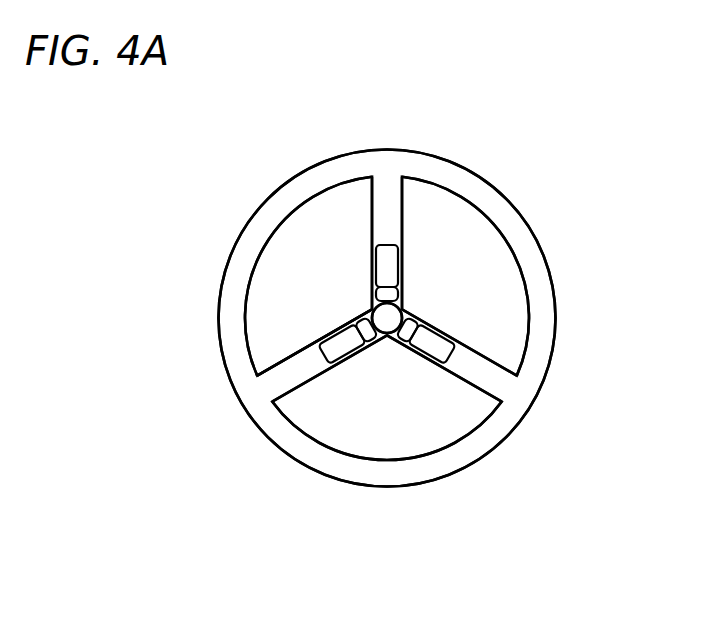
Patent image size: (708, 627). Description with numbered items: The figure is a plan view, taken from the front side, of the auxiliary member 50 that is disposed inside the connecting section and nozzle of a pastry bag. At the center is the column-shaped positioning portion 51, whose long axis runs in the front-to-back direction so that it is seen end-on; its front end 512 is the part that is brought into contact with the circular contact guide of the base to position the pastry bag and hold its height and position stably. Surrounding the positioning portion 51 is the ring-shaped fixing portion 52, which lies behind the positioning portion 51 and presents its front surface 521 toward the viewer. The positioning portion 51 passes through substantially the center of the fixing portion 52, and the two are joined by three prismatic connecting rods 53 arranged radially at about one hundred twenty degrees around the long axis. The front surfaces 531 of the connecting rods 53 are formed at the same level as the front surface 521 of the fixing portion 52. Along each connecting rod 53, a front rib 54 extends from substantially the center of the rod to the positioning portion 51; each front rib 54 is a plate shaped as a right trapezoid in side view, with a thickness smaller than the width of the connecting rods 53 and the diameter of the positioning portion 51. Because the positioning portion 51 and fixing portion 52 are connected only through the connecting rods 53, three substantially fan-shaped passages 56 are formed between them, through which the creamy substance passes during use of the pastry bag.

The auxiliary member 50 is at (549, 152).
The positioning portion 51 is at (392, 323).
The front end 512 is at (400, 312).
The fixing portion 52 is at (345, 151).
The front surface 521 is at (306, 183).
The connecting rod 53 is at (387, 203).
The front surface 531 is at (290, 367).
The front rib 54 is at (388, 258).
The passage 56 is at (487, 256).